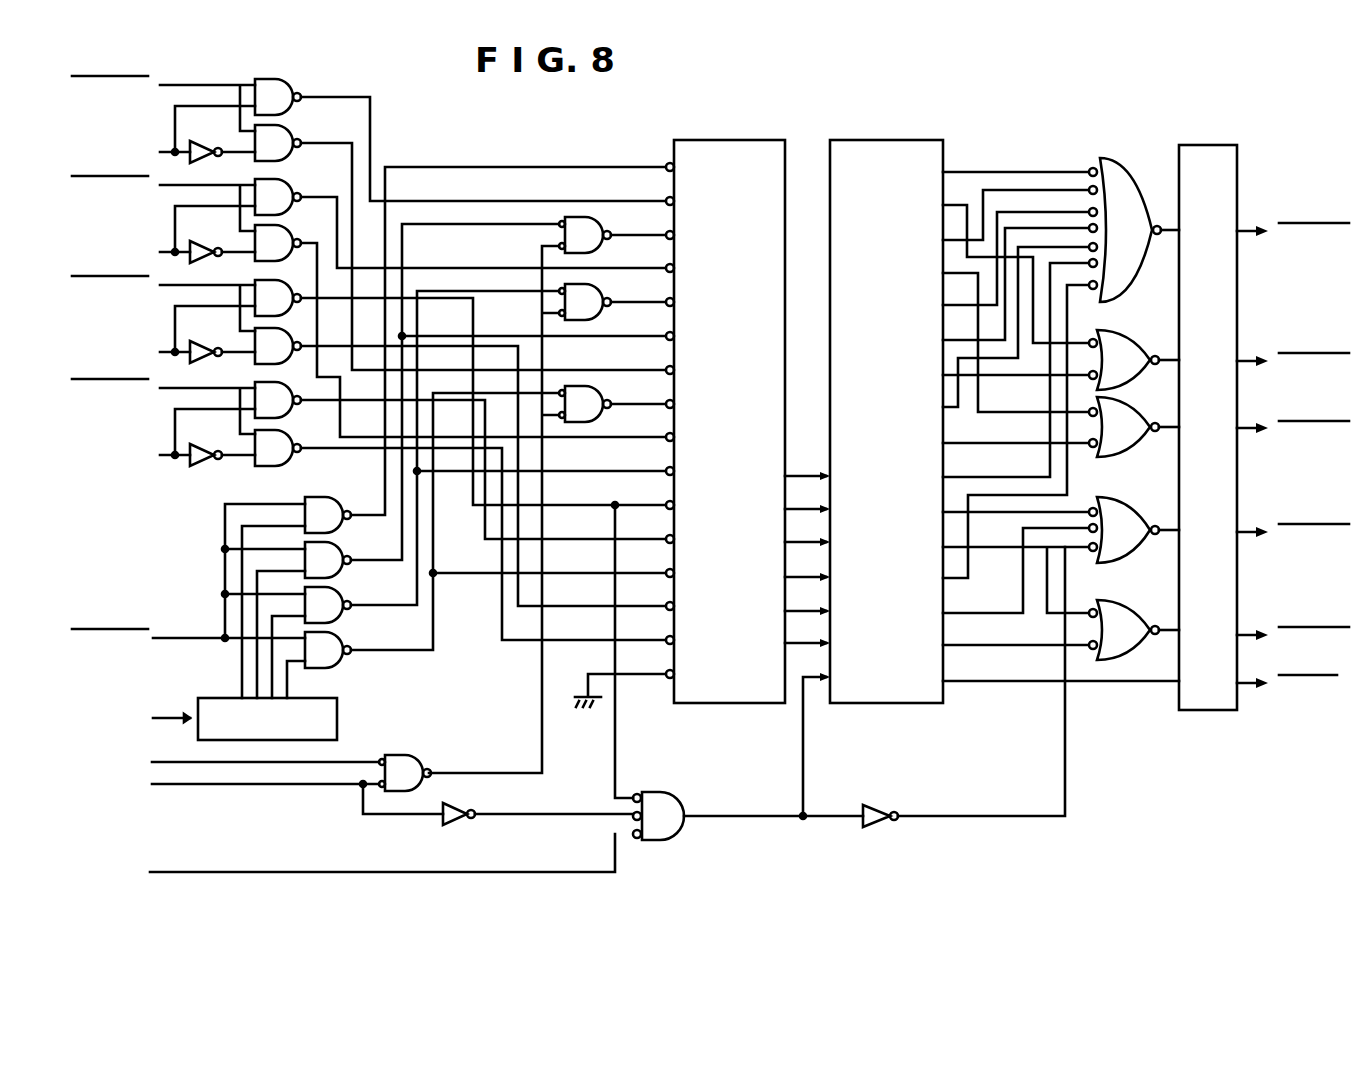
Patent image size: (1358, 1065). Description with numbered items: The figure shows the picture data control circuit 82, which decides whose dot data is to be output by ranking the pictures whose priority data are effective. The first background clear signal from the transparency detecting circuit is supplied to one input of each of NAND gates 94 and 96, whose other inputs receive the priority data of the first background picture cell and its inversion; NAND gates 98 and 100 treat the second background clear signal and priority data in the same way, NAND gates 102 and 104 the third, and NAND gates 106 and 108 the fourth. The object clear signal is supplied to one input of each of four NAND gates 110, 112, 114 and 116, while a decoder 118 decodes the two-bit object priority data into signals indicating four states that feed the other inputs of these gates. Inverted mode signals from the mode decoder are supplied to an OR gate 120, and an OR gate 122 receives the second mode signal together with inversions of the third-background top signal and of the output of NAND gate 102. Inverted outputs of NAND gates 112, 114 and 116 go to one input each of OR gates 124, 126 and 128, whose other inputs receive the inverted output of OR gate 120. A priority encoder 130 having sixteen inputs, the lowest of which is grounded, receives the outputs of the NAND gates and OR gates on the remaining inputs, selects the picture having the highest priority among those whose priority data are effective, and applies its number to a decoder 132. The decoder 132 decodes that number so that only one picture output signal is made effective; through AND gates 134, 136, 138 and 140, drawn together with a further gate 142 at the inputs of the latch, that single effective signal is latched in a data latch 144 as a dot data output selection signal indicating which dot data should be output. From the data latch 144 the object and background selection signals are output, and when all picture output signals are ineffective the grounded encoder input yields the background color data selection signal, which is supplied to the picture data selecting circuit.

The picture data control circuit 82 is at (1258, 831).
The NAND gate 94 is at (276, 81).
The NAND gate 96 is at (280, 133).
The NAND gate 98 is at (280, 183).
The NAND gate 100 is at (285, 236).
The NAND gate 102 is at (265, 288).
The NAND gate 104 is at (258, 340).
The NAND gate 106 is at (285, 410).
The NAND gate 108 is at (268, 460).
The NAND gate 110 is at (325, 500).
The NAND gate 112 is at (338, 548).
The NAND gate 114 is at (338, 593).
The NAND gate 116 is at (338, 638).
The decoder 118 is at (337, 712).
The OR gate 120 is at (407, 757).
The OR gate 122 is at (676, 794).
The OR gate 124 is at (560, 232).
The OR gate 126 is at (560, 300).
The OR gate 128 is at (583, 423).
The priority encoder 130 is at (733, 704).
The decoder 132 is at (890, 704).
The AND gate 134 is at (1122, 212).
The AND gate 136 is at (1118, 345).
The AND gate 138 is at (1121, 428).
The AND gate 140 is at (1116, 517).
The NOR gate 142 is at (1115, 622).
The data latch 144 is at (1177, 698).